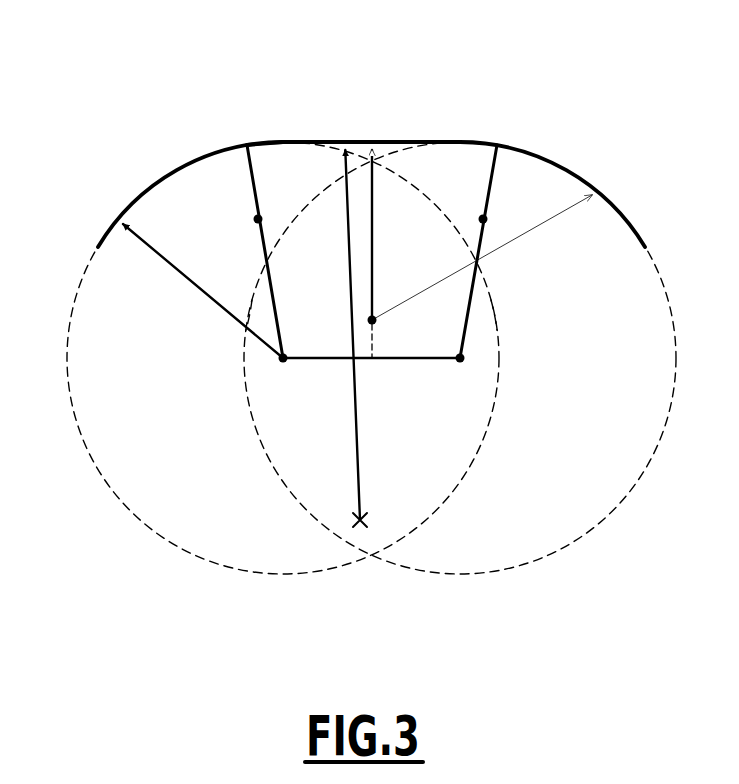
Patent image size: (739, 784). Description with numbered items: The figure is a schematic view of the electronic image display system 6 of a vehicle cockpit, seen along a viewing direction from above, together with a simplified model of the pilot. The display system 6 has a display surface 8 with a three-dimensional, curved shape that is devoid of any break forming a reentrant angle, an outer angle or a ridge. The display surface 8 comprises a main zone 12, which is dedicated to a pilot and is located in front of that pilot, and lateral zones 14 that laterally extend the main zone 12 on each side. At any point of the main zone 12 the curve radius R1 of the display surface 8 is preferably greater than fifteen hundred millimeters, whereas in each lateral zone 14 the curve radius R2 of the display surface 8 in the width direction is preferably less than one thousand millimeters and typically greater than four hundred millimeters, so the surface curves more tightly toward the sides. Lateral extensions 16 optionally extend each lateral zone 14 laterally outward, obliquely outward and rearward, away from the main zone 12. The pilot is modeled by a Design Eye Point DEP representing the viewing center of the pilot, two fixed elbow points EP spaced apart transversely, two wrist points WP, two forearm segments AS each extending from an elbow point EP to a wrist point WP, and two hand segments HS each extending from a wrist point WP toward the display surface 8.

The electronic image display system 6 is at (371, 298).
The display surface 8 is at (397, 143).
The main zone 12 is at (327, 144).
The lateral zone 14 is at (228, 152).
The lateral extension 16 is at (103, 242).
The hand segment HS is at (254, 190).
The wrist point WP is at (257, 219).
The forearm segment AS is at (268, 312).
The elbow point EP is at (283, 360).
The Design Eye Point DEP is at (373, 318).
The curve radius R1 is at (346, 338).
The curve radius R2 is at (203, 291).